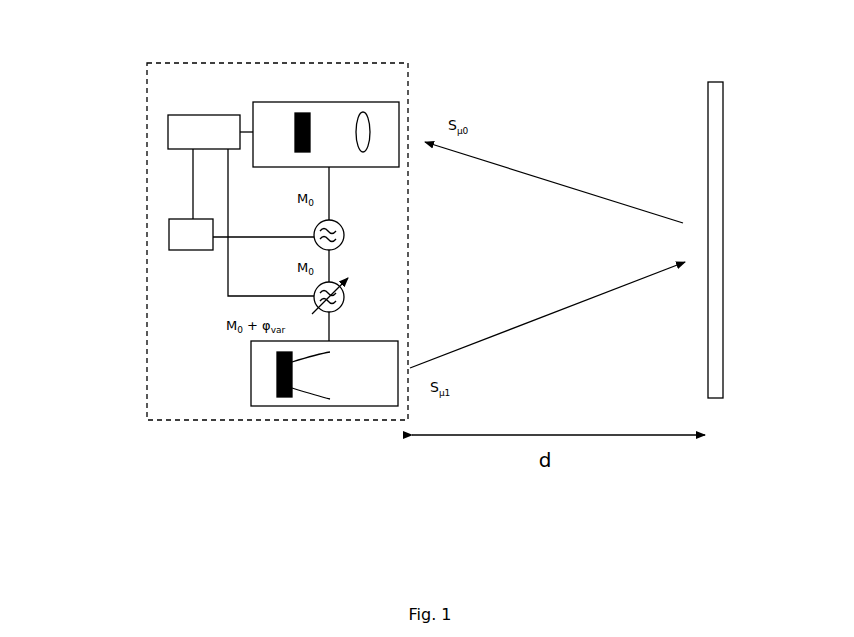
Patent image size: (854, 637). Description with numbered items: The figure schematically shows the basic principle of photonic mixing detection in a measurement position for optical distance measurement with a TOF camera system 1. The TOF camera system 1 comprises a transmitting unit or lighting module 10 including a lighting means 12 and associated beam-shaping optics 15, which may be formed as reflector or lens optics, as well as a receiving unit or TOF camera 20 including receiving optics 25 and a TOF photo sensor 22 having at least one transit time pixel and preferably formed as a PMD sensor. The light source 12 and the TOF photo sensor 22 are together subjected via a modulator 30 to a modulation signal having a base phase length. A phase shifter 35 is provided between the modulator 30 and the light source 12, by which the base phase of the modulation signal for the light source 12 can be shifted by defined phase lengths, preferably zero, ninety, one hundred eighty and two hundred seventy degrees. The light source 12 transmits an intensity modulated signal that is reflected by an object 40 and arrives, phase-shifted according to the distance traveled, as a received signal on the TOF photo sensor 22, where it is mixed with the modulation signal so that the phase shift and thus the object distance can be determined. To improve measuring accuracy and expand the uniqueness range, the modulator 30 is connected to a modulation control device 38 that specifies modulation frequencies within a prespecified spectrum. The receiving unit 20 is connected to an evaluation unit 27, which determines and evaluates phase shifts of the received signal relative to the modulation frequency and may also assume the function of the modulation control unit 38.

The TOF camera system 1 is at (100, 72).
The lighting module 10 is at (350, 417).
The lighting means 12 is at (272, 394).
The beam-shaping optics 15 is at (308, 402).
The TOF camera 20 is at (280, 88).
The TOF photo sensor 22 is at (290, 131).
The receiving optics 25 is at (360, 110).
The evaluation unit 27 is at (182, 125).
The modulator 30 is at (312, 222).
The phase shifter 35 is at (303, 304).
The modulation control device 38 is at (168, 237).
The object 40 is at (722, 375).